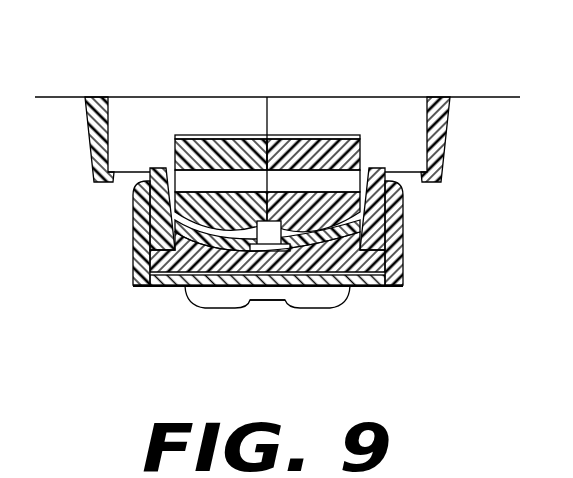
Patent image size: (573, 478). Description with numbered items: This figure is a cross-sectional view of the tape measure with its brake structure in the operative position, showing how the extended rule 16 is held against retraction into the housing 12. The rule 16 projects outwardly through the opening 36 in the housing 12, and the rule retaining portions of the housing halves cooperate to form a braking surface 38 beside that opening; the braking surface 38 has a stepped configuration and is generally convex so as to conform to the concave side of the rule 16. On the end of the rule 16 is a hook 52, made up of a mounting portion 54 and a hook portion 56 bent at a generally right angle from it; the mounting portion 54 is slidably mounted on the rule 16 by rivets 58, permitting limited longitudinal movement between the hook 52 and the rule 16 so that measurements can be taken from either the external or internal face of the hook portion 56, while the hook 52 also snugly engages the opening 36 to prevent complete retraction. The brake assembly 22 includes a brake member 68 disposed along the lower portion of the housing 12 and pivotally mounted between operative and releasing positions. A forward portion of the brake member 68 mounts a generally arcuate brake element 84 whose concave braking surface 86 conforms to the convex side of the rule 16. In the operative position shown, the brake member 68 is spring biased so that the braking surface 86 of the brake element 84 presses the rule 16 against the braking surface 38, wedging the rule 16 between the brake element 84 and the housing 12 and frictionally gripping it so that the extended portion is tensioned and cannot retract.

The housing 12 is at (440, 150).
The rule 16 is at (172, 240).
The brake assembly 22 is at (398, 258).
The opening 36 is at (298, 215).
The braking surface 38 is at (176, 175).
The hook 52 is at (330, 298).
The mounting portion 54 is at (243, 222).
The hook portion 56 is at (236, 298).
The rivets 58 is at (358, 236).
The brake member 68 is at (135, 272).
The brake element 84 is at (378, 283).
The braking surface 86 is at (188, 258).